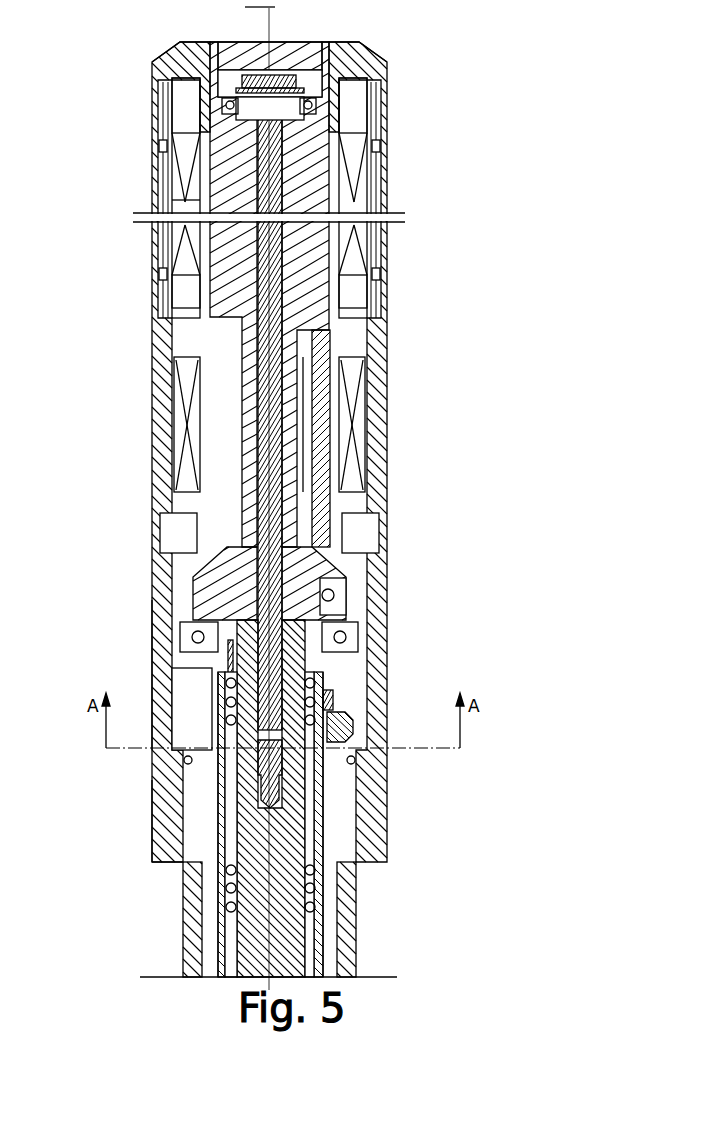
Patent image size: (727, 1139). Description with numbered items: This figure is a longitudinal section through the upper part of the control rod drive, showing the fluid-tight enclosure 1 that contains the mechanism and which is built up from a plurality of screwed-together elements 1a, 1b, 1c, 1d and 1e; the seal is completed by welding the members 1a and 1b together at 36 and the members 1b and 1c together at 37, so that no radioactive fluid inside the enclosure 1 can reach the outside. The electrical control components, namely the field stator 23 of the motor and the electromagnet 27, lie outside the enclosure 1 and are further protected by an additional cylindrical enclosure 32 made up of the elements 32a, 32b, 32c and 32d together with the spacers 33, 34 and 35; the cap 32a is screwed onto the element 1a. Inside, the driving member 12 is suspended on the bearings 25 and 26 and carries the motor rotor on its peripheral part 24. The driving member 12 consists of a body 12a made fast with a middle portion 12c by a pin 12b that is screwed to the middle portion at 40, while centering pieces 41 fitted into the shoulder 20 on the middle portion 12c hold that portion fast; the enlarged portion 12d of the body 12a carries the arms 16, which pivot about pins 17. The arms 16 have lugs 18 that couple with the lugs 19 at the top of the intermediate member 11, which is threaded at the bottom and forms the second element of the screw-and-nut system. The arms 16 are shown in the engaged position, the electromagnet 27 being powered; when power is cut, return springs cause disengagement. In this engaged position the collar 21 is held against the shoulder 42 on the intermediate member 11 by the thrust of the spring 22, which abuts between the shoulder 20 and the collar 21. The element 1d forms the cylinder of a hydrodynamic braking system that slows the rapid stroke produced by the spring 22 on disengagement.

The enclosure 1 is at (152, 485).
The enclosure element 1a is at (365, 80).
The enclosure element 1b is at (152, 610).
The enclosure element 1c is at (152, 825).
The enclosure element 1d is at (160, 862).
The enclosure element 1e is at (192, 925).
The intermediate member 11 is at (318, 827).
The driving member 12 is at (293, 250).
The body of the driving member 12a is at (245, 400).
The pin 12b is at (296, 72).
The middle portion 12c is at (285, 940).
The enlarged portion 12d is at (190, 578).
The arms 16 is at (330, 465).
The pins 17 is at (335, 594).
The lugs 18 is at (343, 728).
The lugs 19 is at (335, 697).
The shoulder 20 is at (190, 712).
The collar 21 is at (318, 898).
The spring 22 is at (226, 895).
The stator 23 is at (152, 200).
The peripheral part 24 is at (152, 258).
The bearing 25 is at (322, 112).
The bearing 26 is at (180, 640).
The electromagnet 27 is at (360, 408).
The cylindrical enclosure 32 is at (152, 440).
The cap 32a is at (152, 66).
The enclosure element 32b is at (152, 108).
The enclosure element 32c is at (152, 370).
The enclosure element 32d is at (152, 525).
The spacer 33 is at (152, 93).
The spacer 34 is at (158, 147).
The spacer 35 is at (152, 305).
The weld 36 is at (378, 535).
The weld 37 is at (188, 762).
The screw connection 40 is at (290, 787).
The centering pieces 41 is at (225, 672).
The shoulder 42 is at (227, 940).